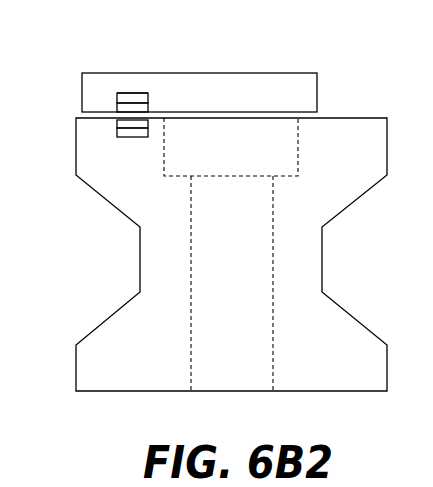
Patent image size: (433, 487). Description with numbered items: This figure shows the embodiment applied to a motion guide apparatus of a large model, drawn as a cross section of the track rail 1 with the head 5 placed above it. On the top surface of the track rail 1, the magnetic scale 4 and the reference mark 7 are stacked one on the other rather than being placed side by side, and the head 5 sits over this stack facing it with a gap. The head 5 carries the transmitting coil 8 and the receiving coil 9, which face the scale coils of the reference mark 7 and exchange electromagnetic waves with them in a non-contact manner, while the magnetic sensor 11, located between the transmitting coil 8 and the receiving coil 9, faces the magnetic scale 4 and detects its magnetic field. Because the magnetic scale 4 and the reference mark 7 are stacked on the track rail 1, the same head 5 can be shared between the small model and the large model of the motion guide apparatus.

The track rail 1 is at (343, 323).
The magnetic scale 4 is at (128, 137).
The head 5 is at (257, 90).
The reference mark 7 is at (117, 122).
The transmitting coil 8 is at (128, 100).
The receiving coil 9 is at (132, 107).
The magnetic sensor 11 is at (138, 97).